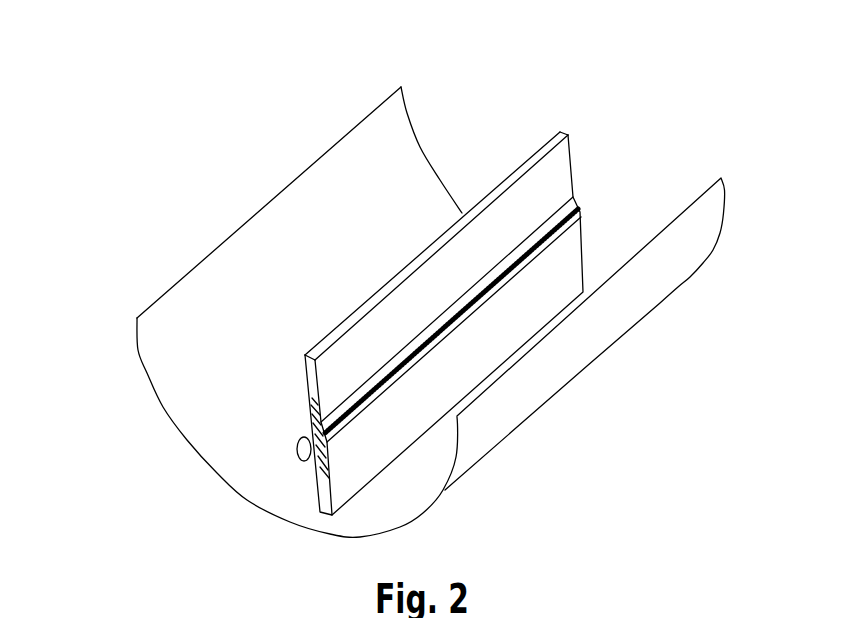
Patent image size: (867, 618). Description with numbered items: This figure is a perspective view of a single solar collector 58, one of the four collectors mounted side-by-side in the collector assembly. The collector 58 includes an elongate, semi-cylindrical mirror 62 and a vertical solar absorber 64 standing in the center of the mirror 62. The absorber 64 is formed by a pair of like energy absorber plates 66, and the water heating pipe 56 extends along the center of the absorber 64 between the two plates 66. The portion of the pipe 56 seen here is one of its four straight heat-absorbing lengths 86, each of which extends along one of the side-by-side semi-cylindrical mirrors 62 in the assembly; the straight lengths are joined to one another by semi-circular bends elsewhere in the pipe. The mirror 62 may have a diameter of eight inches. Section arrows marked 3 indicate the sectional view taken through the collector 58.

The solar collector 58 is at (346, 79).
The semi-cylindrical mirror 62 is at (725, 195).
The solar absorber 64 is at (464, 301).
The energy absorber plates 66 is at (572, 168).
The water heating pipe 56 is at (294, 424).
The straight heat-absorbing length 86 is at (313, 461).
The section line 3- 3 is at (230, 146).